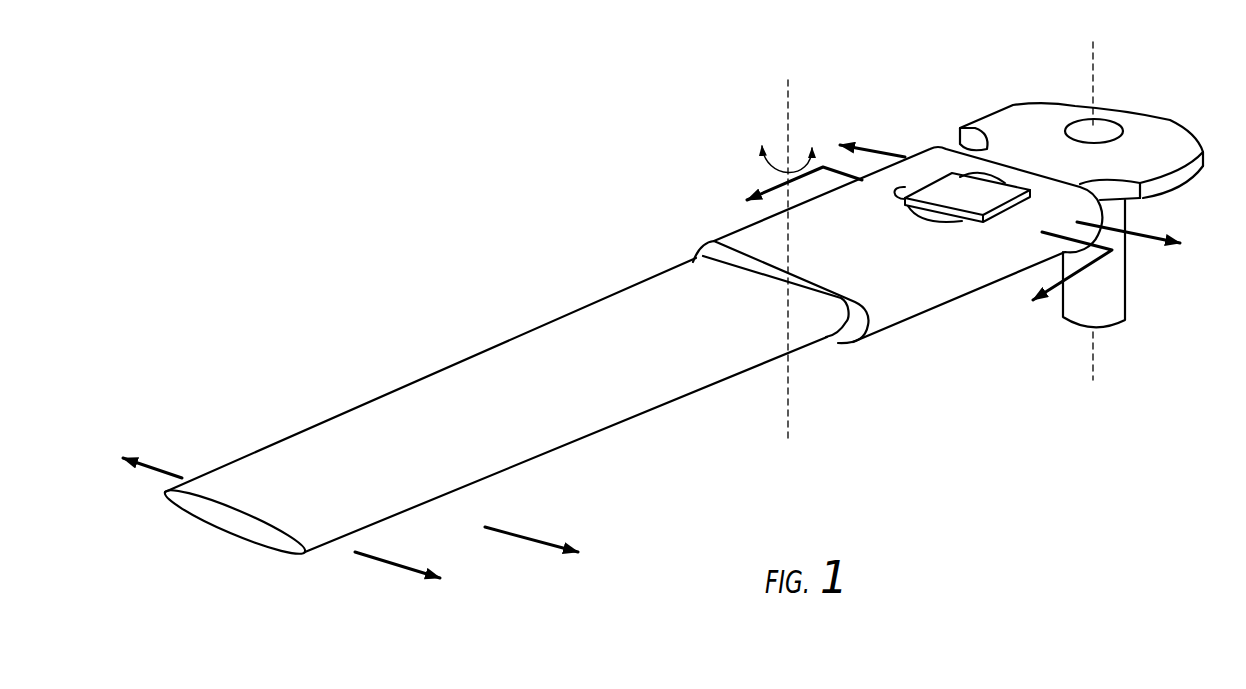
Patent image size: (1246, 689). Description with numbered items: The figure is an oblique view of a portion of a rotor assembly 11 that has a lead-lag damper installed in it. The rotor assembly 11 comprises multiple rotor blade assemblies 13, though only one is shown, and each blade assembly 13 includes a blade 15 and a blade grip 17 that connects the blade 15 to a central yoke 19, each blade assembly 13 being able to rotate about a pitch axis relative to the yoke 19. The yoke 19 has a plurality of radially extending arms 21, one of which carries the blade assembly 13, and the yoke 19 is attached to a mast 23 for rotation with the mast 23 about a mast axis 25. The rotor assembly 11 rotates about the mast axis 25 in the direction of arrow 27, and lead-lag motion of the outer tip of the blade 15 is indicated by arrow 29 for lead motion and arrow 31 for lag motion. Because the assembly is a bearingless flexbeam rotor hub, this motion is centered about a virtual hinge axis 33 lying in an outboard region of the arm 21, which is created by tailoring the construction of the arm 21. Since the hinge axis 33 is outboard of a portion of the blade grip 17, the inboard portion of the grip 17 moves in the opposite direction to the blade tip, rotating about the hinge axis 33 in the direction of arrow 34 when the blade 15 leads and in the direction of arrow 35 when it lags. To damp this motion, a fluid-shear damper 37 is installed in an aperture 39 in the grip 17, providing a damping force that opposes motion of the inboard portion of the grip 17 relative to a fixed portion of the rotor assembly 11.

The rotor assembly 11 is at (452, 242).
The rotor blade assembly 13 is at (467, 355).
The blade 15 is at (367, 445).
The blade grip 17 is at (892, 297).
The yoke 19 is at (1019, 132).
The arm 21 is at (1033, 162).
The mast 23 is at (1088, 317).
The mast axis 25 is at (1093, 97).
The arrow 27 is at (528, 532).
The arrow 29 is at (388, 562).
The arrow 31 is at (163, 476).
The virtual hinge axis 33 is at (790, 410).
The arrow 34 is at (877, 148).
The arrow 35 is at (1140, 242).
The fluid-shear damper 37 is at (938, 172).
The aperture 39 is at (937, 222).